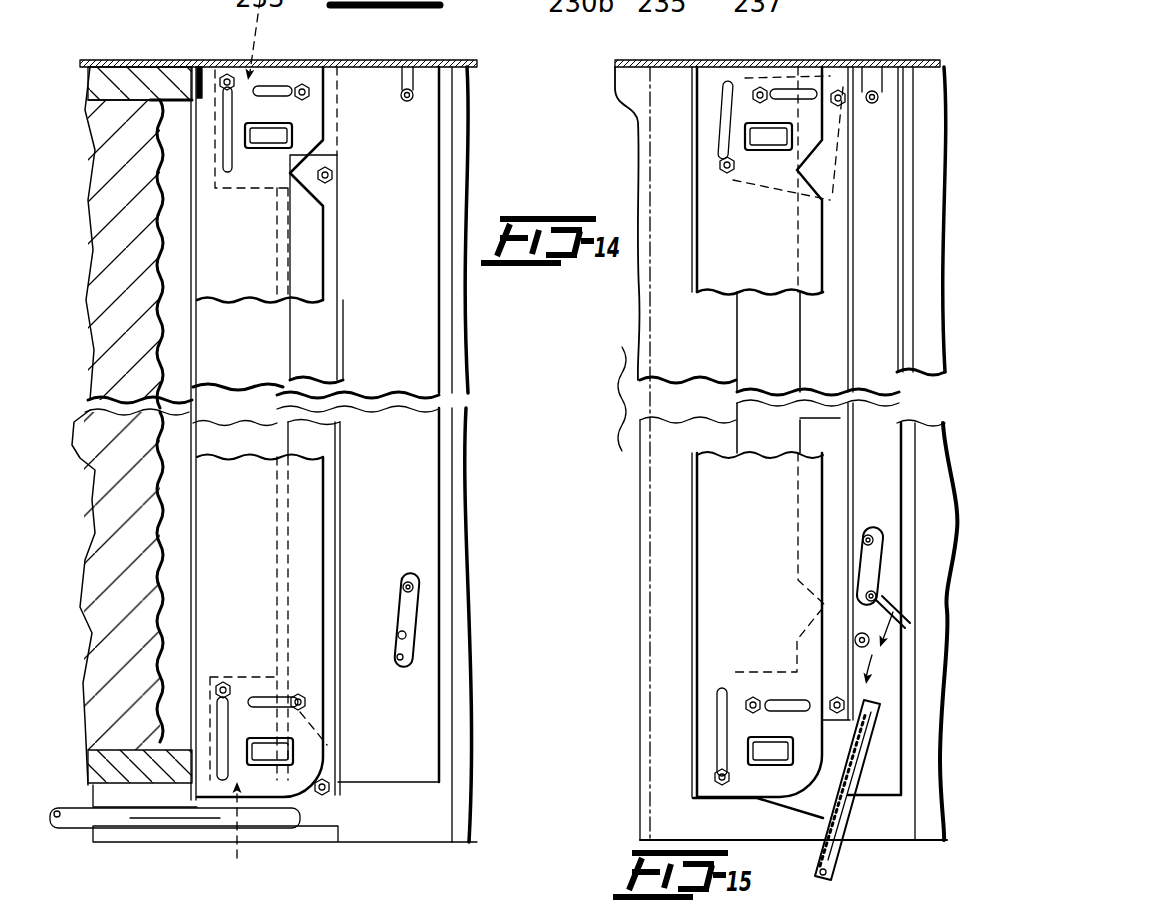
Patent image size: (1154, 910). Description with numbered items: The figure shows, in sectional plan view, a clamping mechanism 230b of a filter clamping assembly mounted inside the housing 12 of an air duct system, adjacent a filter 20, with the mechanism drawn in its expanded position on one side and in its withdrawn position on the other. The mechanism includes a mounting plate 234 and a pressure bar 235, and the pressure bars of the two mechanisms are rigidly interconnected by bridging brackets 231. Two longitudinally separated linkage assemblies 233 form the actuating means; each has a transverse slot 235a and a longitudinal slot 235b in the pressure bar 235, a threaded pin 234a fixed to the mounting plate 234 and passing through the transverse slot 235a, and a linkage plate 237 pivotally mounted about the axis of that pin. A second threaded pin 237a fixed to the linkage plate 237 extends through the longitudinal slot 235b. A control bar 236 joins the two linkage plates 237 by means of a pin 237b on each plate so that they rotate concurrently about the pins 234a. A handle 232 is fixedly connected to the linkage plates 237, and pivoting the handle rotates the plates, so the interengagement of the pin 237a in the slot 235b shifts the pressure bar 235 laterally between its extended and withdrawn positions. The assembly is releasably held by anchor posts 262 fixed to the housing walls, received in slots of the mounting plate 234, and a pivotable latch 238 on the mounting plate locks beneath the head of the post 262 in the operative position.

In FIG. 14, the housing 12 is at (99, 54).
In FIG. 15, the housing 12 is at (622, 44).
In FIG. 14, the filter 20 is at (86, 302).
In FIG. 14, the clamping mechanism 230b is at (296, 864).
In FIG. 15, the clamping mechanism 230b is at (678, 498).
In FIG. 14, the bridging bracket 231 is at (262, 150).
In FIG. 15, the bridging bracket 231 is at (793, 147).
In FIG. 14, the handle 232 is at (128, 833).
In FIG. 15, the handle 232 is at (835, 878).
In FIG. 14, the linkage assembly 233 is at (234, 856).
In FIG. 15, the linkage assembly 233 is at (884, 719).
In FIG. 14, the mounting plate 234 is at (412, 480).
In FIG. 15, the mounting plate 234 is at (906, 402).
In FIG. 14, the threaded pin 234a is at (310, 88).
In FIG. 15, the threaded pin 234a is at (760, 86).
In FIG. 14, the pressure bar 235 is at (260, 290).
In FIG. 15, the pressure bar 235 is at (768, 266).
In FIG. 14, the transverse slot 235a is at (270, 85).
In FIG. 15, the transverse slot 235a is at (783, 88).
In FIG. 14, the longitudinal slot 235b is at (228, 128).
In FIG. 15, the longitudinal slot 235b is at (727, 103).
In FIG. 14, the control bar 236 is at (340, 352).
In FIG. 15, the control bar 236 is at (818, 425).
In FIG. 14, the linkage plate 237 is at (282, 192).
In FIG. 15, the linkage plate 237 is at (746, 186).
In FIG. 14, the second threaded pin 237a is at (230, 74).
In FIG. 15, the second threaded pin 237a is at (719, 165).
In FIG. 14, the pin 237b is at (332, 178).
In FIG. 15, the pin 237b is at (845, 104).
In FIG. 14, the pivotable latch 238 is at (415, 597).
In FIG. 15, the pivotable latch 238 is at (870, 528).
In FIG. 14, the anchor post 262 is at (410, 100).
In FIG. 15, the anchor post 262 is at (870, 88).